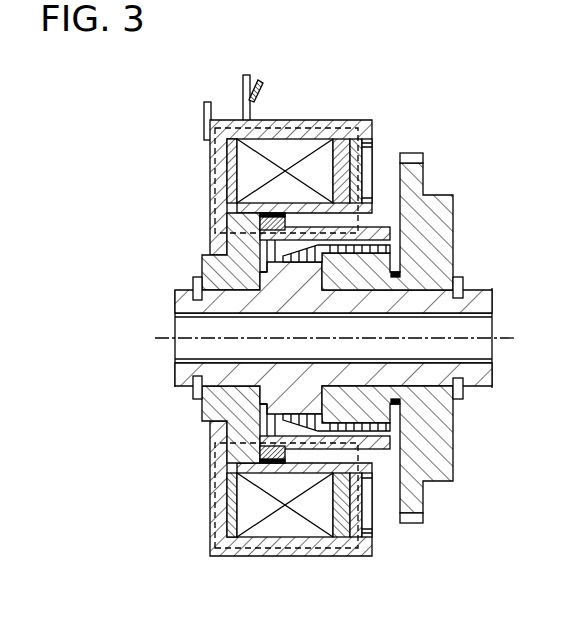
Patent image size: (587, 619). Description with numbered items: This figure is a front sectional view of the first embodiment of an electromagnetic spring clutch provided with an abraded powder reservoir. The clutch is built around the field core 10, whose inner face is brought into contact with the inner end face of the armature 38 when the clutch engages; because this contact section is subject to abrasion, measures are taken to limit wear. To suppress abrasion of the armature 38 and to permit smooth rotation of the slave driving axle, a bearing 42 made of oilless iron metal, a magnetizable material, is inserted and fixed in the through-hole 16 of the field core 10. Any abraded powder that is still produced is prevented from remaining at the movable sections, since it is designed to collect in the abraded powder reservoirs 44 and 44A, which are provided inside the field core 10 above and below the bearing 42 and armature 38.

The field core 10 is at (300, 98).
The through-hole 16 is at (222, 258).
The armature 38 is at (380, 232).
The bearing 42 is at (232, 287).
The abraded powder reservoir 44 is at (258, 207).
The abraded powder reservoir 44A is at (263, 259).